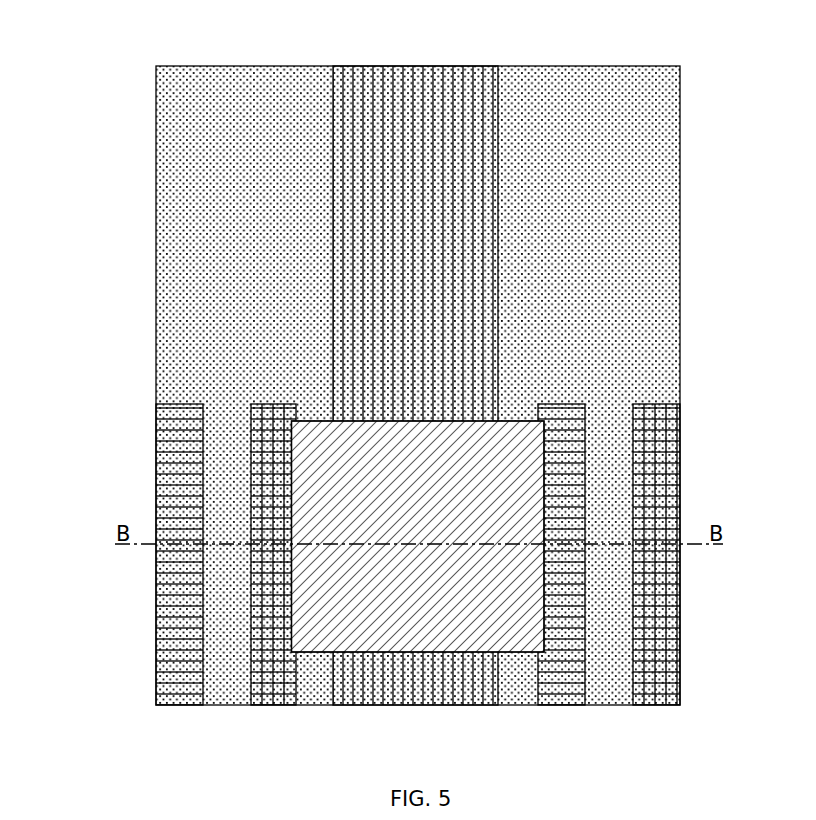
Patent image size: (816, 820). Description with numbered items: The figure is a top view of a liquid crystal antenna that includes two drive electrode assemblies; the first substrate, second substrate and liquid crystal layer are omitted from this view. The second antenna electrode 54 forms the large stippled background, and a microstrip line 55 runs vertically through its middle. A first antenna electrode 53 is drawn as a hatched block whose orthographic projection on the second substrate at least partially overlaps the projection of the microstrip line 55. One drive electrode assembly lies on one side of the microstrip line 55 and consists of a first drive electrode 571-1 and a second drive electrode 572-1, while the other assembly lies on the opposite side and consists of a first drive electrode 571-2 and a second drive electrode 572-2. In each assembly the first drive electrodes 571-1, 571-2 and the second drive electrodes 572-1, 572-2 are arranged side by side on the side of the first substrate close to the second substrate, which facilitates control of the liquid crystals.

The first antenna electrode 53 is at (447, 417).
The second antenna electrode 54 is at (673, 163).
The microstrip line 55 is at (386, 63).
The first drive electrode 571-1 is at (173, 697).
The first drive electrode 571-2 is at (548, 697).
The second drive electrode 572-1 is at (260, 697).
The second drive electrode 572-2 is at (633, 697).